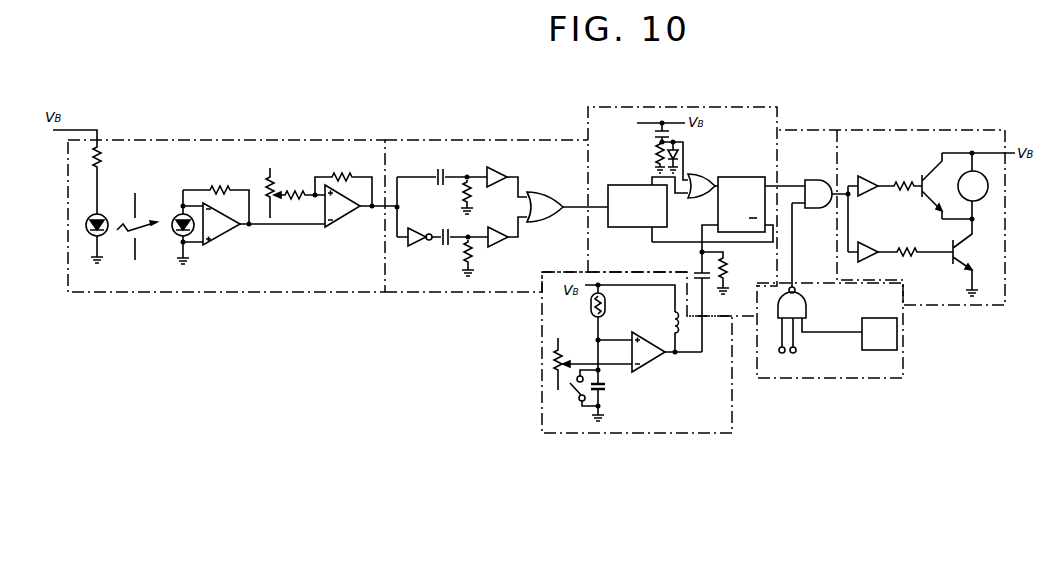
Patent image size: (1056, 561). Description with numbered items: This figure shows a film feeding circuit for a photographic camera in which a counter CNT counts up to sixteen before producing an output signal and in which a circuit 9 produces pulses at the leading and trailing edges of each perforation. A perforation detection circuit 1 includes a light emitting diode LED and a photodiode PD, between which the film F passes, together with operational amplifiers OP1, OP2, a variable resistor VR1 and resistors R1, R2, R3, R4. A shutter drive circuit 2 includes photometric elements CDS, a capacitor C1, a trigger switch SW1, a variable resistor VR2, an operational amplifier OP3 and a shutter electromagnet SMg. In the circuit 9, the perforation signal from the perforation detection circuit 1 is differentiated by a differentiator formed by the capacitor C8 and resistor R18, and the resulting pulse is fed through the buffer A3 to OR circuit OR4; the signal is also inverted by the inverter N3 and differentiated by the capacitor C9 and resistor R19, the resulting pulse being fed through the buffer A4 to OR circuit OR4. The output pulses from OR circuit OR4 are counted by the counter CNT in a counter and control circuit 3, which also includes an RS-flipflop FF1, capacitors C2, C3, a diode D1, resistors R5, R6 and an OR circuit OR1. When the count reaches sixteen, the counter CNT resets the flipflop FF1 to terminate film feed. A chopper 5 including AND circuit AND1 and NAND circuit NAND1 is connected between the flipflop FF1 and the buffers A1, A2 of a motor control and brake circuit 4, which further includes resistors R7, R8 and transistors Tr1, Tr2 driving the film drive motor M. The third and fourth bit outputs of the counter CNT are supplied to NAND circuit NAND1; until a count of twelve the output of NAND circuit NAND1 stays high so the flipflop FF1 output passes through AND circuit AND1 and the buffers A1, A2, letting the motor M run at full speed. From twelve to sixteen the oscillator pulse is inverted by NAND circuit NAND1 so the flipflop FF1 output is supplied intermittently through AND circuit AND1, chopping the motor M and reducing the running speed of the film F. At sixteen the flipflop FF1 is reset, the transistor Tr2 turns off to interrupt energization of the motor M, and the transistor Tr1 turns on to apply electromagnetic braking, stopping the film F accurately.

The perforation detection circuit 1 is at (230, 138).
The circuit 9 is at (468, 138).
The counter and control circuit 3 is at (757, 106).
The shutter drive circuit 2 is at (542, 358).
The chopper 5 is at (835, 379).
The motor control and brake circuit 4 is at (935, 129).
The resistor R1 is at (104, 158).
The light emitting diode LED is at (99, 215).
The film F is at (140, 210).
The photodiode PD is at (176, 234).
The operational amplifier OP1 is at (230, 231).
The resistor R2 is at (215, 188).
The variable resistor VR1 is at (280, 166).
The resistor R3 is at (300, 190).
The resistor R4 is at (338, 175).
The operational amplifier OP2 is at (343, 217).
The capacitor C8 is at (441, 168).
The buffer A3 is at (500, 168).
The resistor R18 is at (472, 200).
The inverter N3 is at (412, 246).
The capacitor C9 is at (445, 246).
The resistor R19 is at (472, 260).
The buffer A4 is at (505, 243).
The OR circuit OR4 is at (556, 181).
The capacitor C2 is at (670, 135).
The resistor R5 is at (655, 153).
The diode D1 is at (679, 156).
The counter CNT is at (622, 228).
The OR circuit OR1 is at (708, 175).
The RS-flipflop FF1 is at (748, 177).
The capacitor C3 is at (699, 272).
The resistor R6 is at (727, 268).
The AND circuit AND1 is at (822, 168).
The buffer A1 is at (872, 170).
The resistor R7 is at (904, 182).
The transistor Tr1 is at (928, 201).
The film drive motor M is at (973, 186).
The buffer A2 is at (872, 236).
The resistor R8 is at (906, 256).
The transistor Tr2 is at (955, 268).
The NAND circuit NAND1 is at (806, 300).
The photometric elements CDS is at (606, 302).
The shutter electromagnet SMg is at (672, 322).
The operational amplifier OP3 is at (655, 362).
The variable resistor VR2 is at (570, 338).
The trigger switch SW1 is at (572, 397).
The capacitor C1 is at (606, 388).